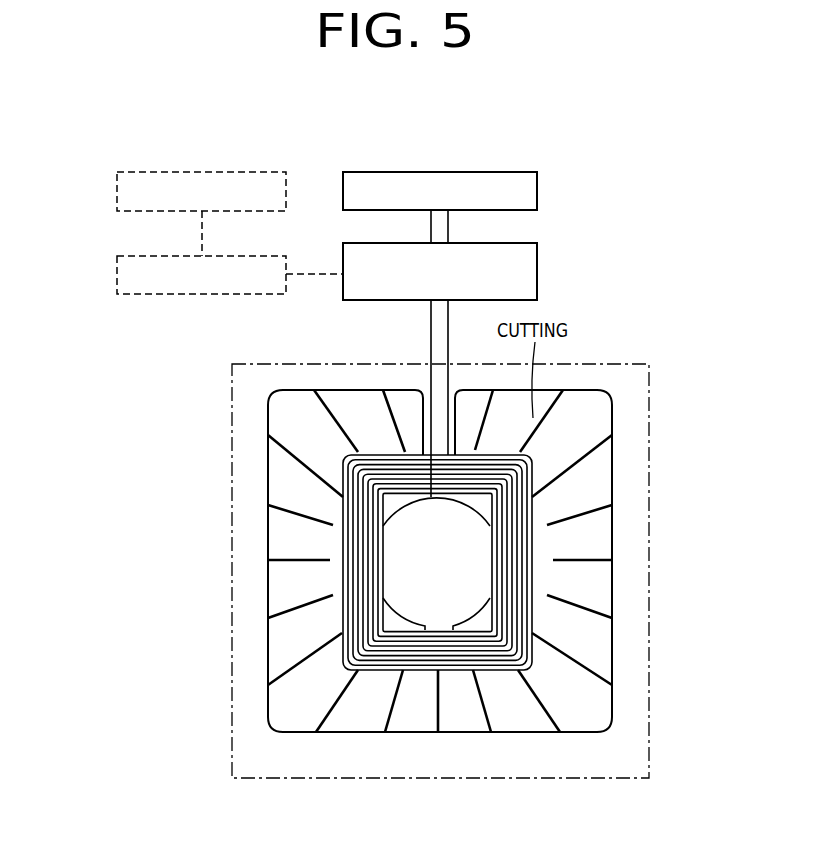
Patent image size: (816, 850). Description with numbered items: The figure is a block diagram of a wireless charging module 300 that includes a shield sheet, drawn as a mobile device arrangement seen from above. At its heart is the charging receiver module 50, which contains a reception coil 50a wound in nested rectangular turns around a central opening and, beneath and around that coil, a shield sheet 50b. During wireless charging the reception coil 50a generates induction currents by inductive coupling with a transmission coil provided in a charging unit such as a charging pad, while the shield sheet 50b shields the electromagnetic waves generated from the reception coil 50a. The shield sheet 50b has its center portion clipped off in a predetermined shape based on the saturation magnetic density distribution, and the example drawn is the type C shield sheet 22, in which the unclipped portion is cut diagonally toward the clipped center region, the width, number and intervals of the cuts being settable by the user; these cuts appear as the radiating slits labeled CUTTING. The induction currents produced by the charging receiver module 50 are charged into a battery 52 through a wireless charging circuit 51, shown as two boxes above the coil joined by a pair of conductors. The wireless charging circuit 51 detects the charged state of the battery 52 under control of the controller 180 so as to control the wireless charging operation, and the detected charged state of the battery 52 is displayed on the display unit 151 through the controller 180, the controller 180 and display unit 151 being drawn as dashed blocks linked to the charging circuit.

The display unit 151 is at (117, 186).
The controller 180 is at (117, 272).
The battery 52 is at (537, 183).
The wireless charging circuit 51 is at (537, 275).
The shield sheet 22 is at (352, 415).
The wireless charging module 300 is at (690, 323).
The charging receiver module 50 is at (649, 438).
The shield sheet 50b is at (592, 573).
The reception coil 50a is at (532, 623).